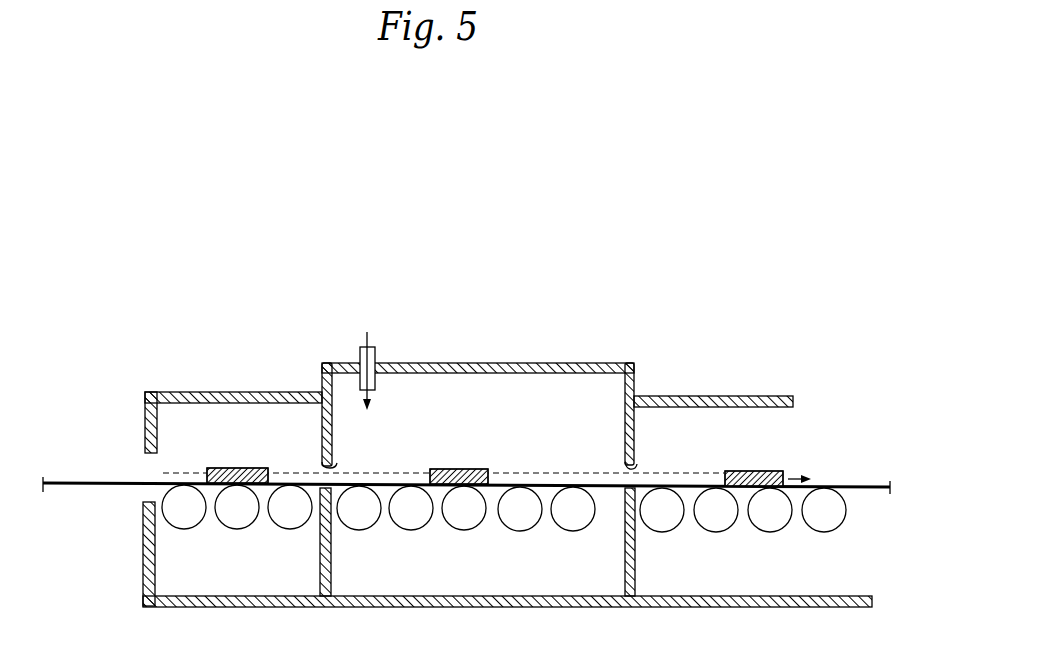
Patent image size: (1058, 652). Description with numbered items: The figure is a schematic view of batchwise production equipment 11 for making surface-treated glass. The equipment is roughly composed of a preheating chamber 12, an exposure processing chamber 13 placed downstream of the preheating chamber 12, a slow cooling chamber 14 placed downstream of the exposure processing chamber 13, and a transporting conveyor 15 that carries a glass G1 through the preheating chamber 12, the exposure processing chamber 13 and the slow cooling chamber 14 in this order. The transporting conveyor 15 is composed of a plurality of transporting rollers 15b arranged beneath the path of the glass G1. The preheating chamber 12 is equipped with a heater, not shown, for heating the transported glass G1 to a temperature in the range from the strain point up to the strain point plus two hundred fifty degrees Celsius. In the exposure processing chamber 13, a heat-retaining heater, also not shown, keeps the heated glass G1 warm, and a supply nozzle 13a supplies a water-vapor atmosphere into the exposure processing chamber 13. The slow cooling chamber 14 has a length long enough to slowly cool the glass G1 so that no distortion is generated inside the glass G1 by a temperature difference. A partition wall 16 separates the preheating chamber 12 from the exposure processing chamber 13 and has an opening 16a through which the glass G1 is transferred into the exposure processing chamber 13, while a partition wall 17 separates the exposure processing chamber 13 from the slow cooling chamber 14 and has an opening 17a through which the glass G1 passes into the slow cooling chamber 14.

The batchwise production equipment 11 is at (706, 258).
The preheating chamber 12 is at (249, 425).
The exposure processing chamber 13 is at (498, 400).
The supply nozzle 13a is at (377, 352).
The slow cooling chamber 14 is at (717, 418).
The transporting conveyor 15 is at (852, 478).
The transporting rollers 15b is at (468, 522).
The partition wall 16 is at (323, 430).
The opening 16a is at (333, 466).
The partition wall 17 is at (624, 430).
The opening 17a is at (636, 470).
The glass G1 is at (240, 467).